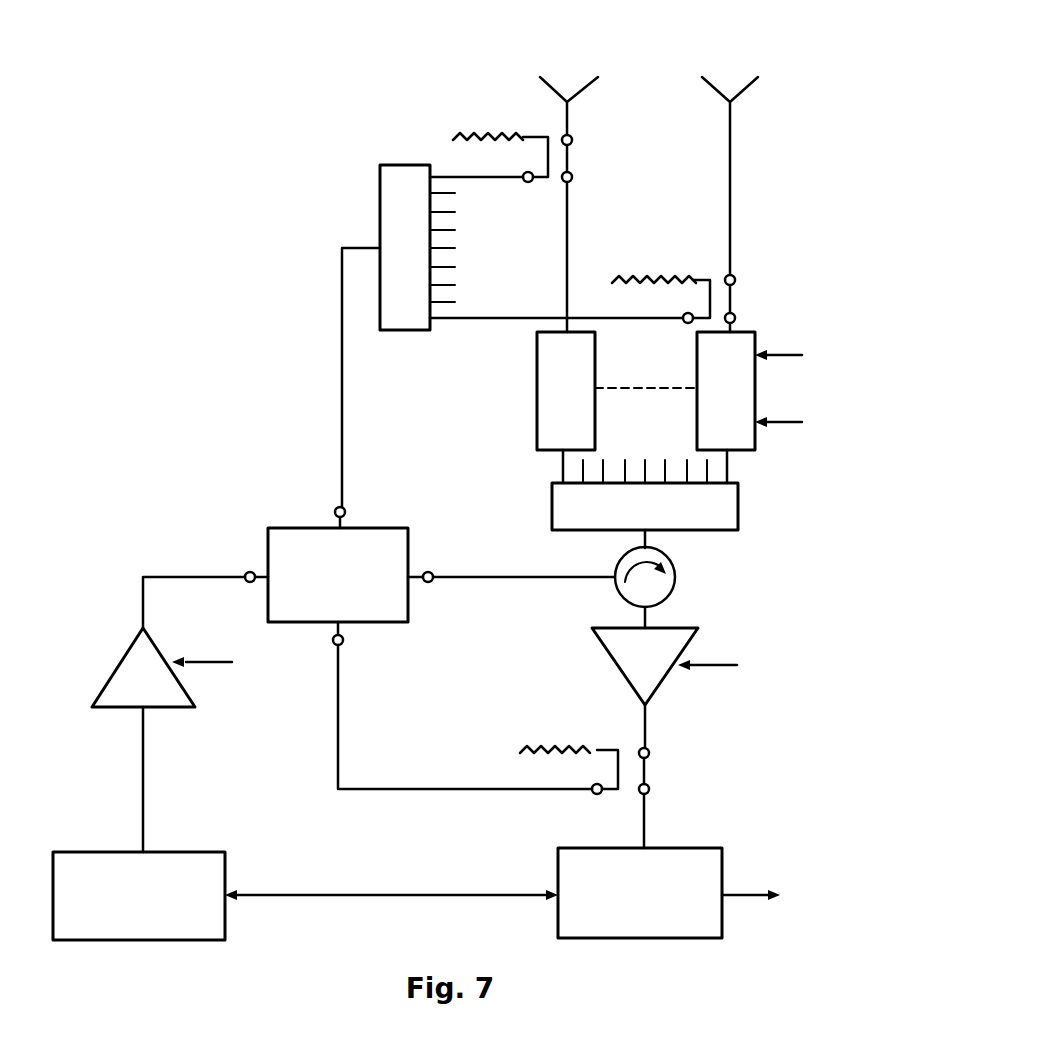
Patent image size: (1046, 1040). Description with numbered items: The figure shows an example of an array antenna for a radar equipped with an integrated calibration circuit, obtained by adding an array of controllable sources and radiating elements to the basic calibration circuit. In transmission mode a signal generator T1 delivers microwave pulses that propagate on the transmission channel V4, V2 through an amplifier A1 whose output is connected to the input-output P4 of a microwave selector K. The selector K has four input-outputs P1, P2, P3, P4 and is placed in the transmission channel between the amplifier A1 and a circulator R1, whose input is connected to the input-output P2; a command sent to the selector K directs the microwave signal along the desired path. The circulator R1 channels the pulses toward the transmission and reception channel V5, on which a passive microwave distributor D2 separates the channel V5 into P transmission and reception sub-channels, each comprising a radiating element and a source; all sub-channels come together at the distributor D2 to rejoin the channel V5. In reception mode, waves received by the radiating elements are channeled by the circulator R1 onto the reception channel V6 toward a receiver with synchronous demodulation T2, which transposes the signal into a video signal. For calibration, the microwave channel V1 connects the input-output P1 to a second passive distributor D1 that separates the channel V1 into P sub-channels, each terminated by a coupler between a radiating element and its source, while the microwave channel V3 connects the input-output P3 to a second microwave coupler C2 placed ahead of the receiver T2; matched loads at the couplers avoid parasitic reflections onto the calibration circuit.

The microwave channel V1 is at (342, 348).
The passive microwave distributor D1 is at (405, 330).
The passive microwave distributor D2 is at (738, 508).
The transmission and reception channel V5 is at (648, 537).
The circulator R1 is at (673, 587).
The reception channel V6 is at (645, 722).
The microwave coupler C2 is at (660, 770).
The receiver with synchronous demodulation T2 is at (680, 848).
The transmission channel V2 is at (533, 579).
The microwave selector K is at (300, 528).
The input-output P1 is at (345, 510).
The input-output P2 is at (430, 573).
The input-output P3 is at (343, 640).
The input-output P4 is at (252, 583).
The microwave channel V3 is at (338, 730).
The amplifier A1 is at (112, 650).
The transmission channel V4 is at (143, 765).
The signal generator T1 is at (183, 850).